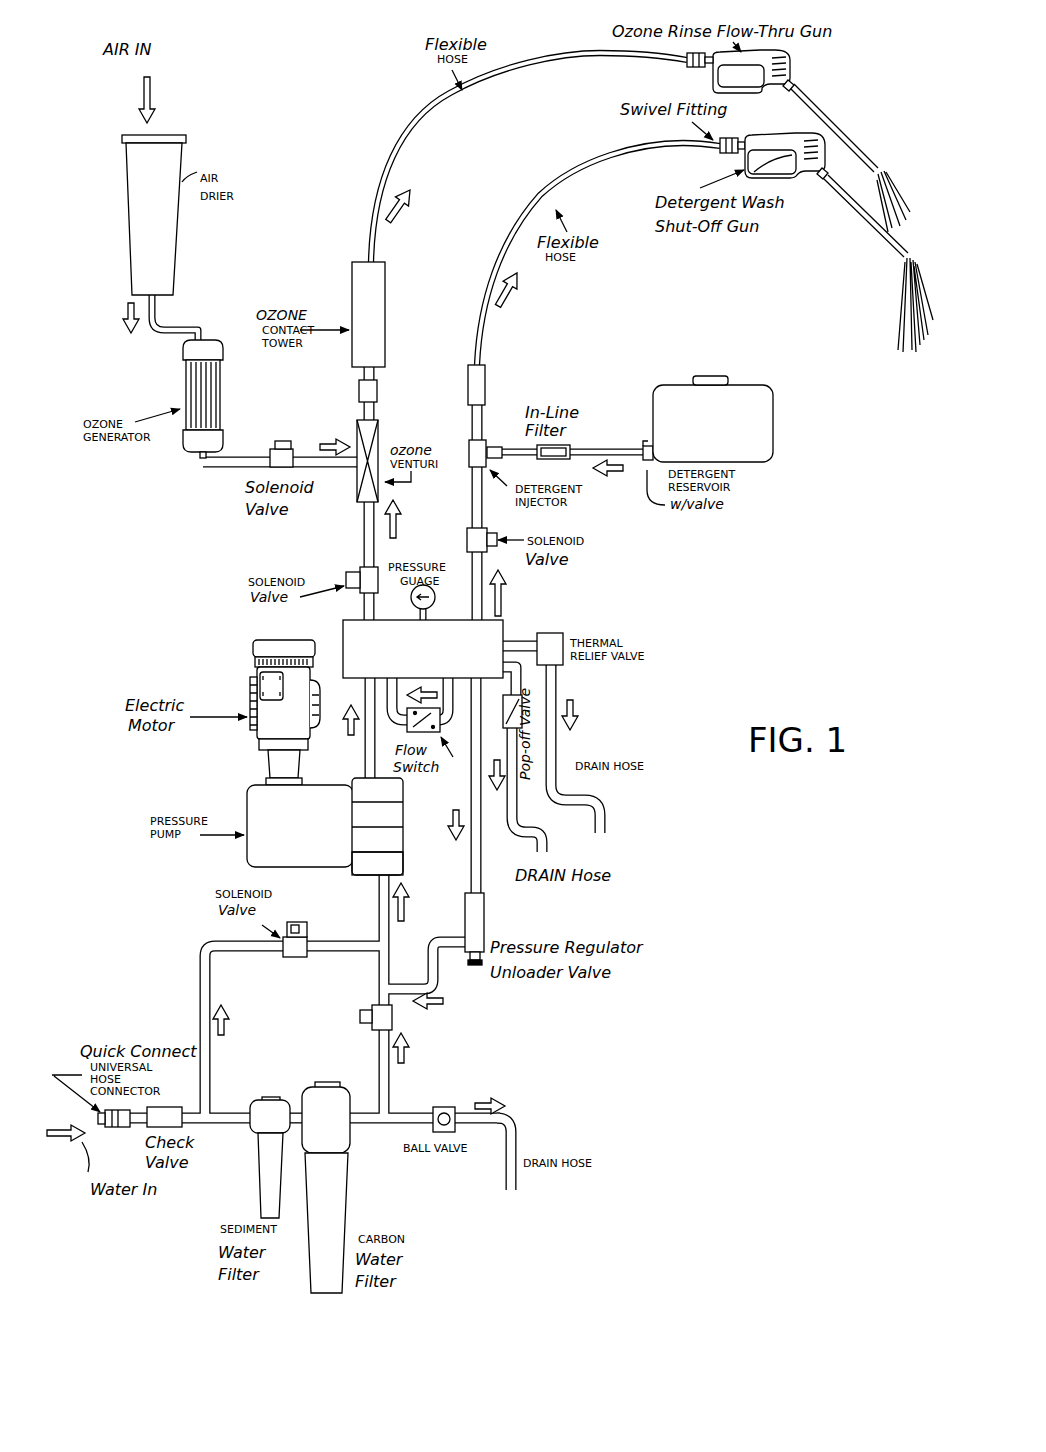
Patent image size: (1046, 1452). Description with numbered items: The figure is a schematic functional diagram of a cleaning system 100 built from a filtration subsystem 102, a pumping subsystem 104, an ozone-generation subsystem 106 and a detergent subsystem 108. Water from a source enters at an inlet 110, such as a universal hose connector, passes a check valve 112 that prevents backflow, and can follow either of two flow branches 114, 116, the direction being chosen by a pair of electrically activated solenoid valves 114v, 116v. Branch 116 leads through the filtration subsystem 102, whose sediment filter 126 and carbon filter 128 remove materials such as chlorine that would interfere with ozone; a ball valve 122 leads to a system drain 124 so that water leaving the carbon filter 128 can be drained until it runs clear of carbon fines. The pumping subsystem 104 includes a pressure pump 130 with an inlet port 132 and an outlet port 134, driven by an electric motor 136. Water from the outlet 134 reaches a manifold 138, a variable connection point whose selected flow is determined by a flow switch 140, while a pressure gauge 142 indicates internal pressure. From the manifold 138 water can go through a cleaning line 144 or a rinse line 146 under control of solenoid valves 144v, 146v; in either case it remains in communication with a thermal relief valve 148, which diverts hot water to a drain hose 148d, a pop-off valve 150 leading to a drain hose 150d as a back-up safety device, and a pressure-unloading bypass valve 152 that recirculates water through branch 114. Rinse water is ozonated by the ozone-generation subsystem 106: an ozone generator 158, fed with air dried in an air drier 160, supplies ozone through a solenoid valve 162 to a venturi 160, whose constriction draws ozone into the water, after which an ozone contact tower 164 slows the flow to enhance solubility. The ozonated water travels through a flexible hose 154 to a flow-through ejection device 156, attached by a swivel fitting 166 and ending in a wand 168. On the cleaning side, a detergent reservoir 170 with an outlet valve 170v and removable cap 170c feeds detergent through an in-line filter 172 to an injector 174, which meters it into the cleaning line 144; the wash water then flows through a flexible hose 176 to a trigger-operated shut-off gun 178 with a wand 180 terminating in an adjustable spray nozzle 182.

The system 100 is at (725, 830).
The filtration subsystem 102 is at (438, 1200).
The pumping subsystem 104 is at (160, 778).
The ozone-generation subsystem 106 is at (180, 480).
The detergent subsystem 108 is at (640, 535).
The inlet 110 is at (126, 1130).
The check valve 112 is at (185, 1113).
The flow branch 114 is at (218, 1055).
The solenoid valve 114v is at (298, 930).
The flow branch 116 is at (232, 1128).
The solenoid valve 116v is at (393, 1018).
The ball valve 122 is at (442, 1107).
The system drain 124 is at (520, 1130).
The sediment filter 126 is at (262, 1193).
The carbon filter 128 is at (345, 1187).
The pressure pump 130 is at (327, 848).
The inlet port 132 is at (404, 871).
The outlet port 134 is at (352, 796).
The electric motor 136 is at (250, 686).
The manifold 138 is at (490, 638).
The flow switch 140 is at (407, 730).
The pressure gauge 142 is at (414, 606).
The cleaning line 144 is at (489, 512).
The solenoid valve 144v is at (490, 553).
The rinse line 146 is at (356, 533).
The solenoid valve 146v is at (345, 578).
The thermal relief valve 148 is at (562, 640).
The drain hose 148d is at (604, 815).
The pop-off valve 150 is at (503, 708).
The drain hose 150d is at (543, 845).
The pressure-unloading bypass valve 152 is at (485, 921).
The flexible hose 154 is at (414, 140).
The hand-held ejection device 156 is at (810, 73).
The ozone generator 158 is at (223, 390).
The venturi 160 is at (180, 229).
The solenoid valve 162 is at (285, 444).
The ozone contact tower 164 is at (386, 270).
The swivel fitting 166 is at (686, 63).
The wand 168 is at (834, 124).
The detergent reservoir 170 is at (732, 435).
The removable cap 170c is at (704, 375).
The outlet valve 170v is at (648, 466).
The in-line filter 172 is at (578, 446).
The injector 174 is at (468, 462).
The flexible hose 176 is at (563, 190).
The shut-off gun 178 is at (838, 146).
The wand 180 is at (851, 200).
The spray head or nozzle 182 is at (883, 236).